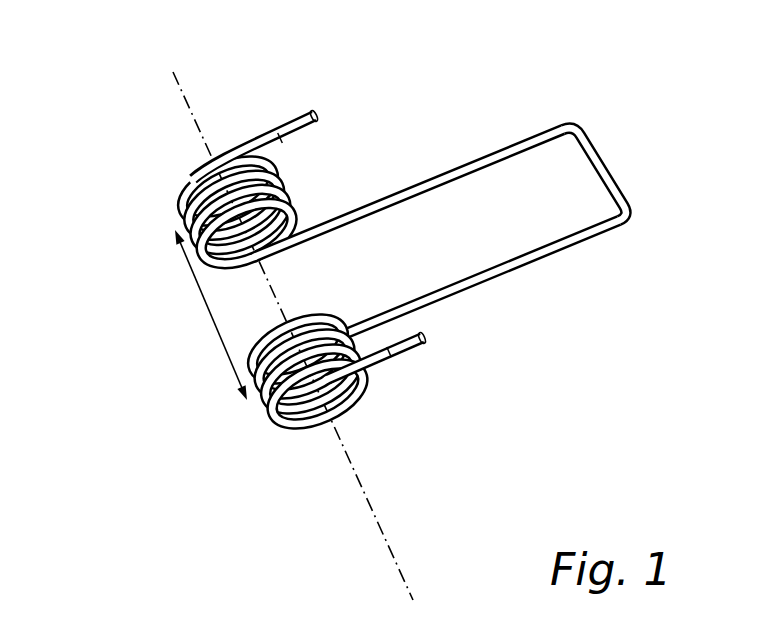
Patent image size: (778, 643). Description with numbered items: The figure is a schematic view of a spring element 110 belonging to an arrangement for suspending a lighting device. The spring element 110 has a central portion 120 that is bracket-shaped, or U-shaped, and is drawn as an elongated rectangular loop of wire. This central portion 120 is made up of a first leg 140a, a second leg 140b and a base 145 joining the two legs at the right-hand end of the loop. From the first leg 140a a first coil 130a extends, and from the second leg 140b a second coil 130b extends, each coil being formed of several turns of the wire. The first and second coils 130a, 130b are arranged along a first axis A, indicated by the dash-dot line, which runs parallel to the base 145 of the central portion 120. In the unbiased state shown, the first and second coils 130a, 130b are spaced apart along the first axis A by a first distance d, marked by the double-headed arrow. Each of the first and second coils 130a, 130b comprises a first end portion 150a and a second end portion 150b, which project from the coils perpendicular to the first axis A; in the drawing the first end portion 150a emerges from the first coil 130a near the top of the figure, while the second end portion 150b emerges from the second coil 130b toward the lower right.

The spring element 110 is at (375, 303).
The central portion 120 is at (447, 167).
The first coil 130a is at (197, 184).
The second coil 130b is at (272, 407).
The first leg 140a is at (372, 202).
The second leg 140b is at (523, 268).
The base 145 is at (610, 164).
The first end portion 150a is at (295, 118).
The second end portion 150b is at (410, 357).